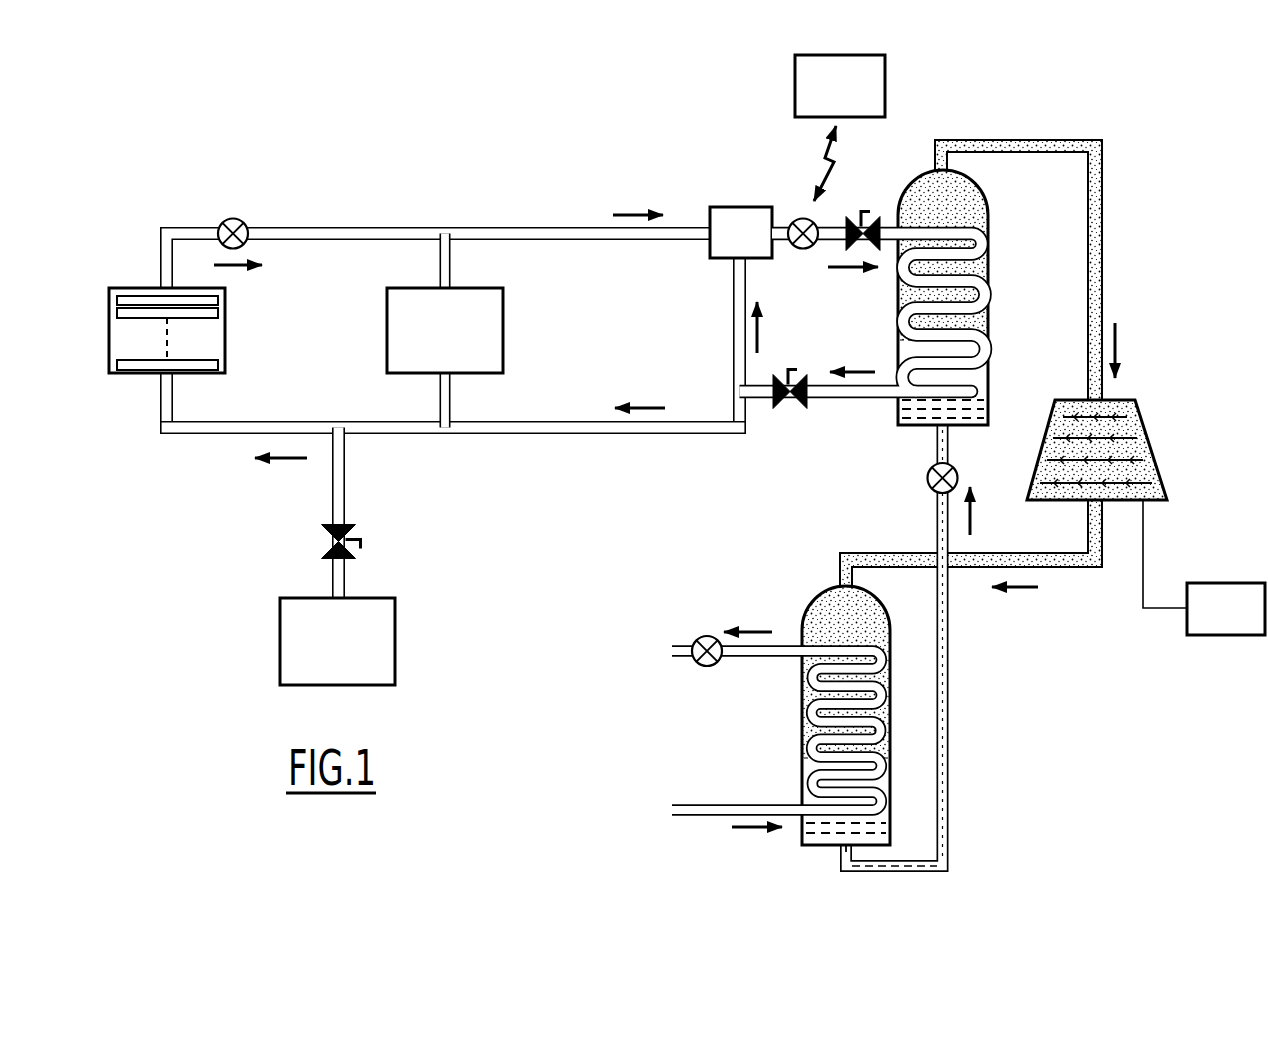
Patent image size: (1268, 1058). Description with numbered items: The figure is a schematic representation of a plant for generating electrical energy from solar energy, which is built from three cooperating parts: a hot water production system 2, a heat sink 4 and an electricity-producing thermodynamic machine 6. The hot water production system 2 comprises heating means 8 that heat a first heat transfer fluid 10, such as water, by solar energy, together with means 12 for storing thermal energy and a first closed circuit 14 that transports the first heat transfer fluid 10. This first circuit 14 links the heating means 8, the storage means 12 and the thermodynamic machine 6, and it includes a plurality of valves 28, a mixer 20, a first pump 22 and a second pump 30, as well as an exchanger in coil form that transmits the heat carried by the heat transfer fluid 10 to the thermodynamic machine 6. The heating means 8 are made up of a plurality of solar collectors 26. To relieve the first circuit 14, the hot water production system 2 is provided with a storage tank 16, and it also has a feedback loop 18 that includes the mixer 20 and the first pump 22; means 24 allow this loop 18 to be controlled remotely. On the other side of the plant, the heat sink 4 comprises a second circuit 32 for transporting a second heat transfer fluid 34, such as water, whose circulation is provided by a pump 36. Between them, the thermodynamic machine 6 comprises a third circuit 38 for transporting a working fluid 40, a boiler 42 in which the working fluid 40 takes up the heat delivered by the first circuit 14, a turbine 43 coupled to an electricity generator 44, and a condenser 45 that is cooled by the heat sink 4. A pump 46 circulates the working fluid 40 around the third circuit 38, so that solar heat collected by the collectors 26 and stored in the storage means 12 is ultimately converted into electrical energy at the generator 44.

The hot water production system 2 is at (551, 180).
The heat sink 4 is at (678, 735).
The electricity-producing thermodynamic machine 6 is at (1167, 368).
The heating means 8 is at (128, 373).
The first heat transfer fluid 10 is at (500, 227).
The thermal energy storage means 12 is at (387, 322).
The first closed circuit 14 is at (648, 436).
The storage tank 16 is at (280, 643).
The feedback loop 18 is at (728, 350).
The mixer 20 is at (738, 207).
The first pump 22 is at (803, 249).
The remote control means 24 is at (885, 93).
The solar collectors 26 is at (205, 356).
The valves 28 is at (866, 216).
The second pump 30 is at (232, 218).
The second circuit 32 is at (748, 664).
The second heat transfer fluid 34 is at (783, 646).
The pump 36 is at (710, 637).
The third circuit 38 is at (1052, 138).
The working fluid 40 is at (1102, 197).
The boiler 42 is at (988, 222).
The turbine 43 is at (1157, 450).
The electricity generator 44 is at (1220, 635).
The condenser 45 is at (813, 846).
The pump 46 is at (927, 478).